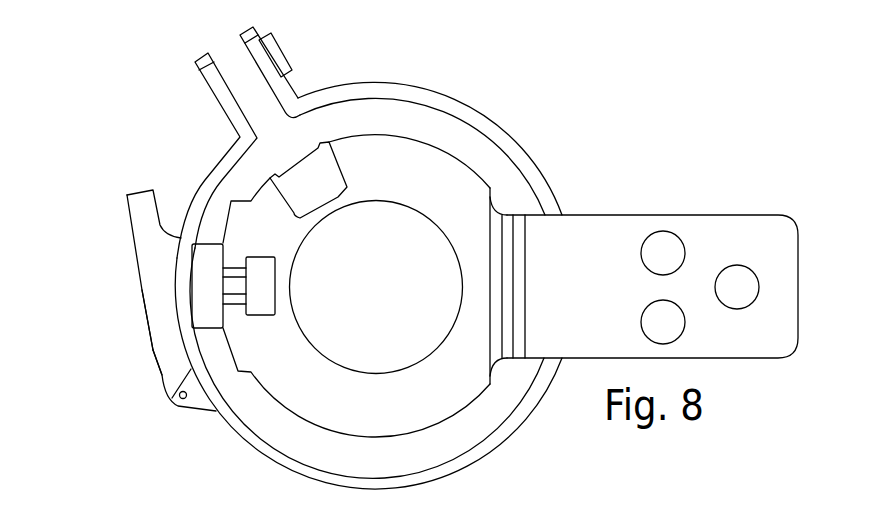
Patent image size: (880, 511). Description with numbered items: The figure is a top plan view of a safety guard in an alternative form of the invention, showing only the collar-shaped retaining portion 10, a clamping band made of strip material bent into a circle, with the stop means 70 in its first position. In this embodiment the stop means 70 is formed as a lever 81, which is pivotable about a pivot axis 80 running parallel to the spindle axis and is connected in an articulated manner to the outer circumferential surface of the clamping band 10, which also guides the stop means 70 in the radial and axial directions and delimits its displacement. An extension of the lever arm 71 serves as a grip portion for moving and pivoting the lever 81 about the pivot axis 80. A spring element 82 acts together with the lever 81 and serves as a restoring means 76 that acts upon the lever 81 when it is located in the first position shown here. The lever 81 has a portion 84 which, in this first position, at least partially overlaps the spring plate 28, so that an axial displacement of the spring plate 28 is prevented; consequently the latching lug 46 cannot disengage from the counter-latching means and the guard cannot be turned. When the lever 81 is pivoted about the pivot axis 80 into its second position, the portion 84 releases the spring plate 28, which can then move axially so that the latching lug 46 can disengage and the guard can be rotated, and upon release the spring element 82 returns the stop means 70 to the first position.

The collar-shaped retaining portion 10 is at (219, 176).
The spring plate 28 is at (430, 167).
The latching lug 46 is at (236, 290).
The stop means 70 is at (150, 268).
The extension of the lever arm 71 is at (142, 210).
The restoring means 76 is at (155, 378).
The pivot axis 80 is at (174, 403).
The lever 81 is at (160, 322).
The spring element 82 is at (160, 370).
The portion of the lever 84 is at (217, 278).